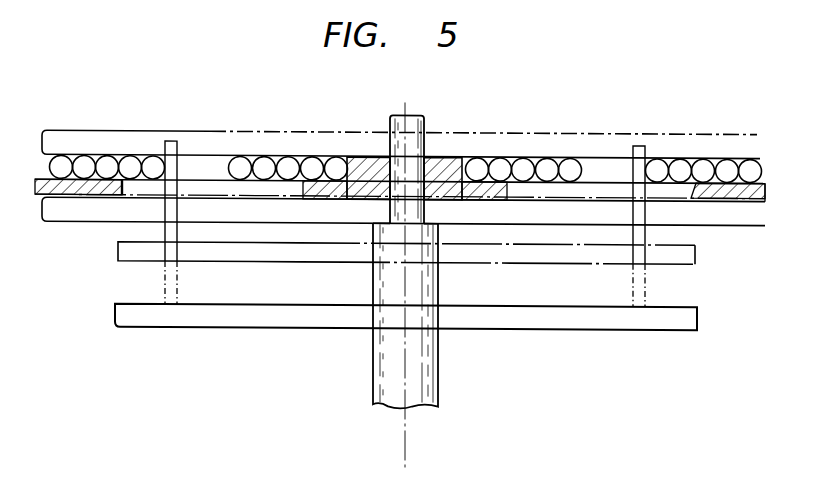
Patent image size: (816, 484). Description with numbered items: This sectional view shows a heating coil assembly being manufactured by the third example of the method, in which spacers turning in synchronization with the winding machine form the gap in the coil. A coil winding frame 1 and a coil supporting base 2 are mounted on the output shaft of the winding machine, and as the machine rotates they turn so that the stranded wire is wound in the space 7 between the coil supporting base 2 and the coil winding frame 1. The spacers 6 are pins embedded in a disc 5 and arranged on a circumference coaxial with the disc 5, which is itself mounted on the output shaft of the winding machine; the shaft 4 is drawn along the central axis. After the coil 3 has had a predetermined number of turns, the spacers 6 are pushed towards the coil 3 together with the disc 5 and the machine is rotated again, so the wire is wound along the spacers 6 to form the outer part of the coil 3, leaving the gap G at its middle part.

The coil winding frame 1 is at (240, 141).
The coil supporting base 2 is at (72, 187).
The coil 3 is at (155, 162).
The gap G is at (203, 166).
The shaft 4 is at (392, 311).
The disc 5 is at (267, 313).
The spacers 6 is at (170, 293).
The space 7 is at (205, 178).